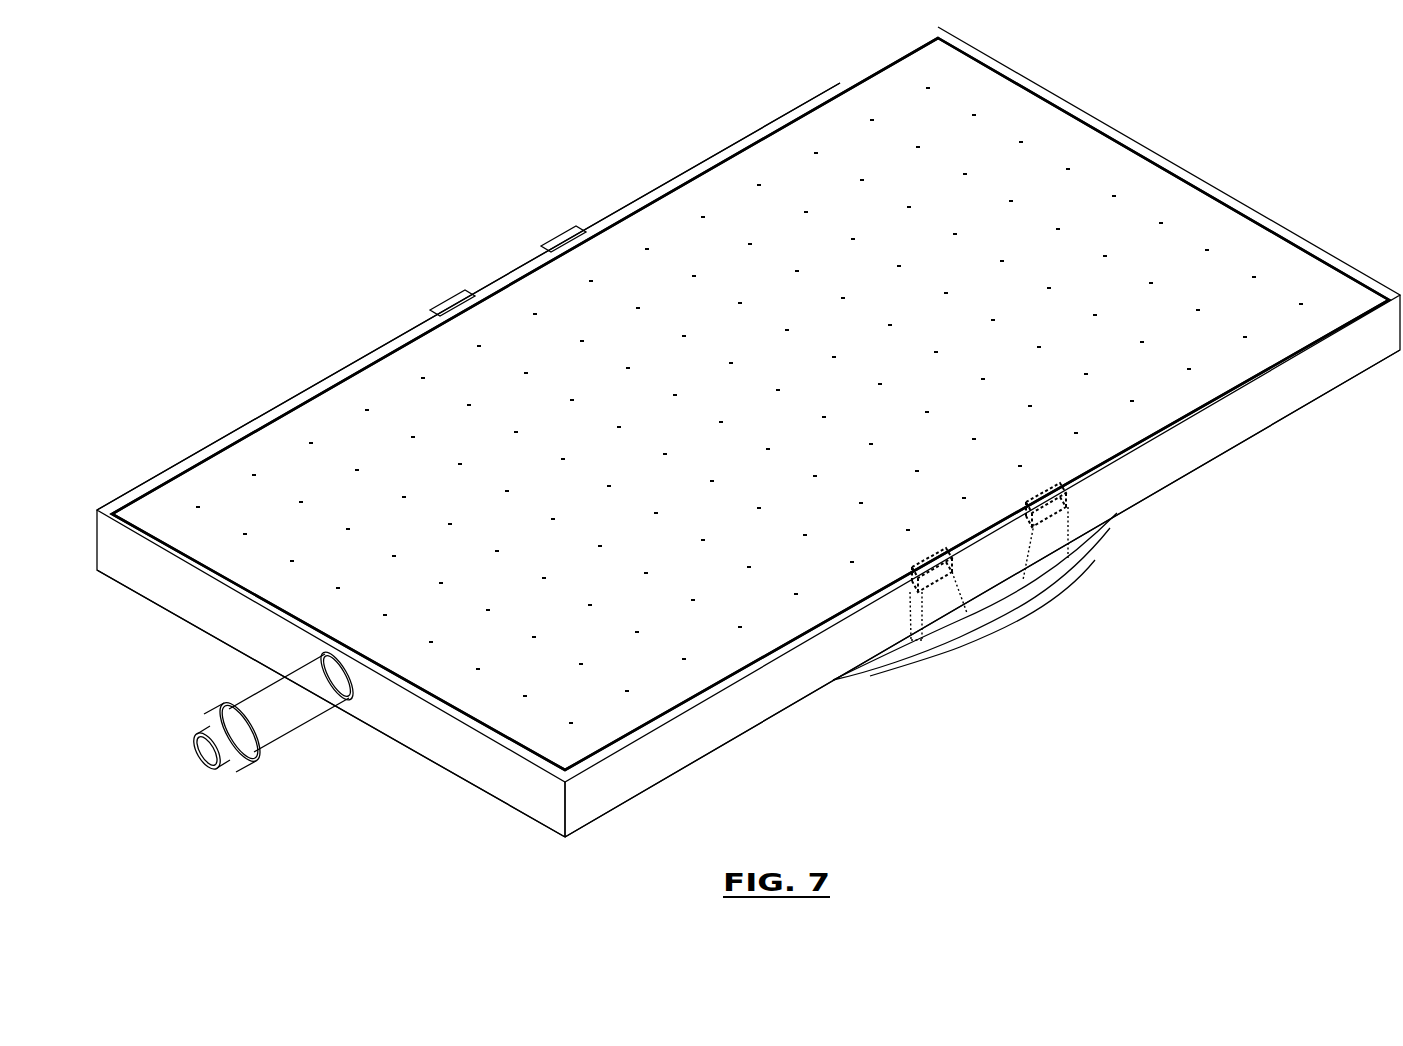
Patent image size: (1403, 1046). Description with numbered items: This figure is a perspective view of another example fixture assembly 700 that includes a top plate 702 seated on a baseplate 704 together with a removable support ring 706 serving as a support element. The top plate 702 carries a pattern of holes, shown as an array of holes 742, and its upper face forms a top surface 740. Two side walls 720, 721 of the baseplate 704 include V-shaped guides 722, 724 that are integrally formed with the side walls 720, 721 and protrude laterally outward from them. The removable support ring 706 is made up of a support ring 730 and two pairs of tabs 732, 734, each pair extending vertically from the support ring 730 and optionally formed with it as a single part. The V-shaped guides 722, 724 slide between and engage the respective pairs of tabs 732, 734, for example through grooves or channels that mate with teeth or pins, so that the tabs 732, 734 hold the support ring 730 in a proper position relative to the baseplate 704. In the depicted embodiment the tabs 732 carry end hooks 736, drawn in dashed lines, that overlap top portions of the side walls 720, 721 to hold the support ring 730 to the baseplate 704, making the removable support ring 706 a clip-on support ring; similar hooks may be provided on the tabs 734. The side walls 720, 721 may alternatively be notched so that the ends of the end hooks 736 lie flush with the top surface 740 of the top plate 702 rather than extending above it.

The fixture assembly 700 is at (355, 121).
The top plate 702 is at (778, 130).
The baseplate 704 is at (1276, 426).
The removable support ring 706 is at (1100, 545).
The side wall 720 is at (1180, 450).
The side wall 721 is at (340, 371).
The V-shaped guide 722 is at (1000, 577).
The V-shaped guide 724 is at (511, 276).
The support ring 730 is at (1058, 579).
The tabs 732 is at (945, 618).
The tabs 734 is at (568, 226).
The end hooks 736 is at (920, 590).
The top surface 740 is at (730, 180).
The array of holes 742 is at (1068, 168).